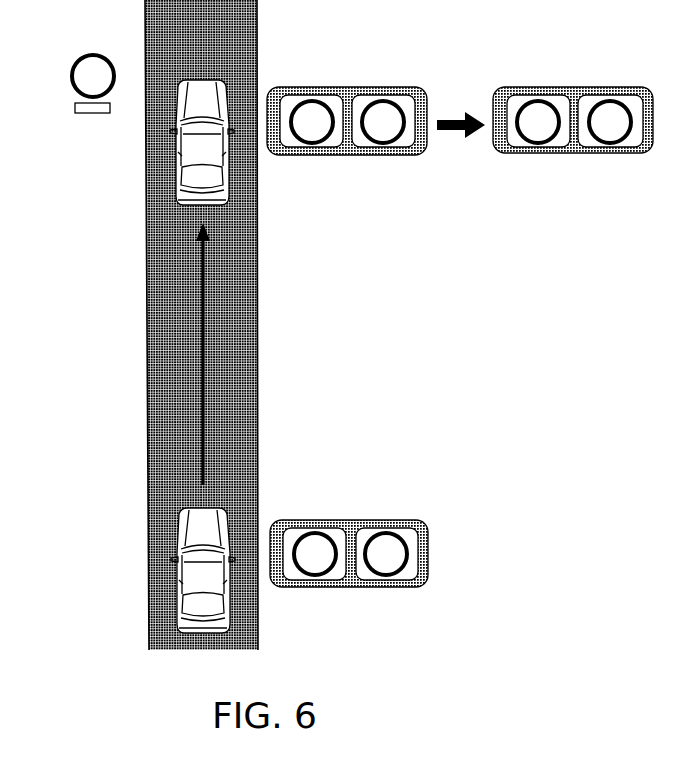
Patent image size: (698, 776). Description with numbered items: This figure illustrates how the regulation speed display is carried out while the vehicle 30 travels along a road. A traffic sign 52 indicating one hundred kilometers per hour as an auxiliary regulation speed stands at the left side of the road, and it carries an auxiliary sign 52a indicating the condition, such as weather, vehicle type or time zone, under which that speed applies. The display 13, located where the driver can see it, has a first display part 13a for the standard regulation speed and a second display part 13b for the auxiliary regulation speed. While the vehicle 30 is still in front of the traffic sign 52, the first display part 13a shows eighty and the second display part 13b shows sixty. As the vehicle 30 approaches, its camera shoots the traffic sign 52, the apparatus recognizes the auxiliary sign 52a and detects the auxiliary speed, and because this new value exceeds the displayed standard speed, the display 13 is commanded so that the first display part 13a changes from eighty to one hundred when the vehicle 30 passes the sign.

The display 13 is at (349, 157).
The first display part 13a is at (308, 93).
The second display part 13b is at (376, 93).
The vehicle 30 is at (210, 183).
The traffic sign 52 is at (91, 53).
The auxiliary sign 52a is at (75, 107).